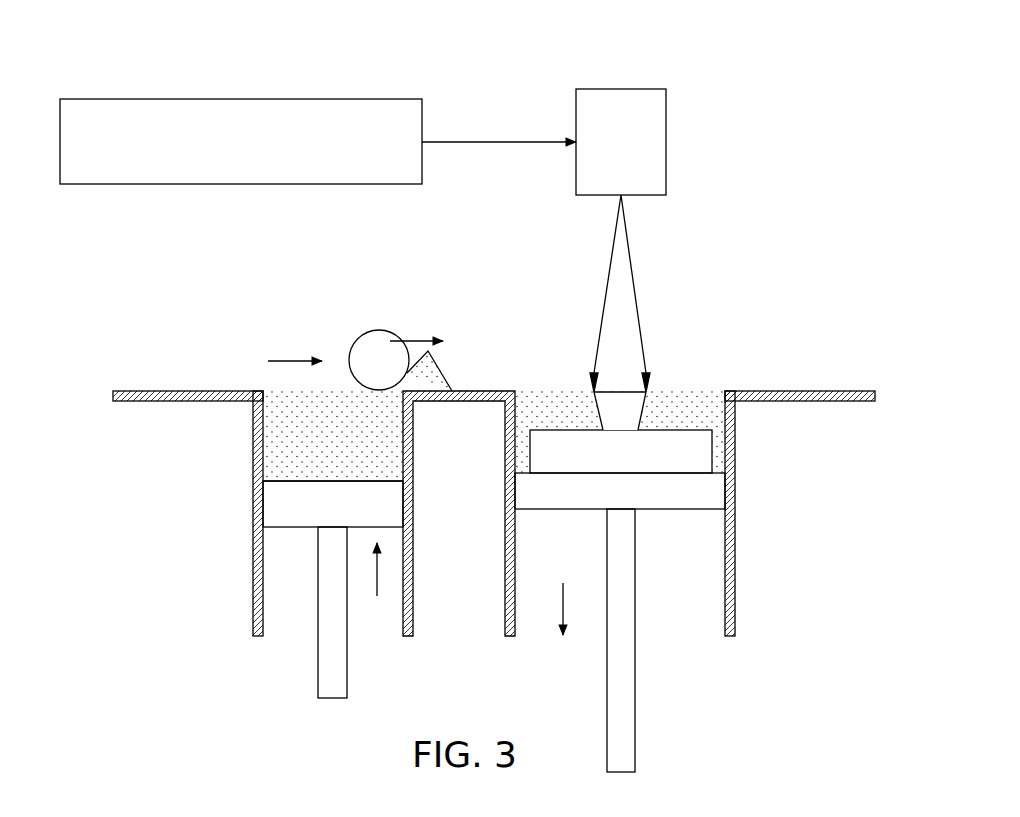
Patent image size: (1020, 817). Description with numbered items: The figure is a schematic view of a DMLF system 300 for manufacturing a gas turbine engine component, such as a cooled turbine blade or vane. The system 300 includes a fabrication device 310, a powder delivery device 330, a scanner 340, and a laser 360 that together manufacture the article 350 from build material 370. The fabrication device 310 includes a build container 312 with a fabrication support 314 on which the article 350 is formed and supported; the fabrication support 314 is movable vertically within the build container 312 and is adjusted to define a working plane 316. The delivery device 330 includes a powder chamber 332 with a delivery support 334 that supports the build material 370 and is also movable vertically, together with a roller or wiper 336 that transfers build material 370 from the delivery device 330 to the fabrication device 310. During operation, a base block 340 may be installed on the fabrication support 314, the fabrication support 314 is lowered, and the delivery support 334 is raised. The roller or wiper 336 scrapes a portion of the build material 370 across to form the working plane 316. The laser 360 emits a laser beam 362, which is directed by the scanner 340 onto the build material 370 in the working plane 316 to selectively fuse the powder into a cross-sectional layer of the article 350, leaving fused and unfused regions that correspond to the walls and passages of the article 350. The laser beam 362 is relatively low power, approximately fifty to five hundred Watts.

The DMLF system 300 is at (783, 110).
The fabrication device 310 is at (762, 522).
The build container 312 is at (733, 418).
The fabrication support 314 is at (682, 512).
The working plane 316 is at (703, 397).
The powder delivery device 330 is at (175, 495).
The powder chamber 332 is at (258, 452).
The delivery support 334 is at (273, 502).
The roller or wiper 336 is at (378, 328).
The scanner 340 is at (622, 88).
The article 350 is at (583, 391).
The laser 360 is at (248, 98).
The laser beam 362 is at (500, 140).
The build material 370 is at (272, 428).